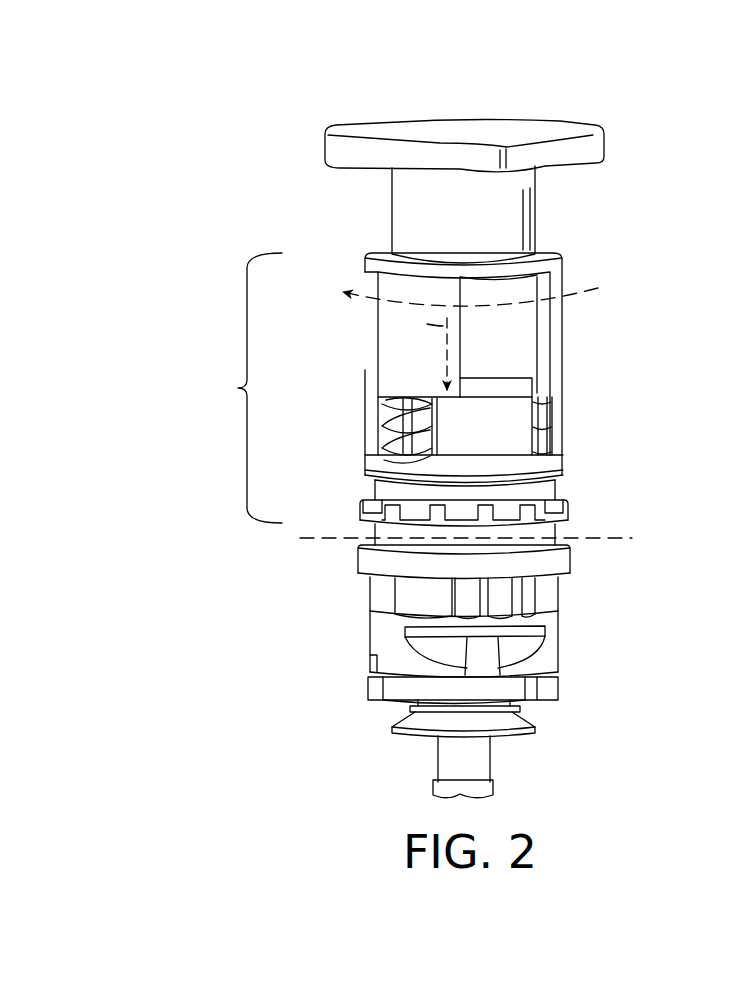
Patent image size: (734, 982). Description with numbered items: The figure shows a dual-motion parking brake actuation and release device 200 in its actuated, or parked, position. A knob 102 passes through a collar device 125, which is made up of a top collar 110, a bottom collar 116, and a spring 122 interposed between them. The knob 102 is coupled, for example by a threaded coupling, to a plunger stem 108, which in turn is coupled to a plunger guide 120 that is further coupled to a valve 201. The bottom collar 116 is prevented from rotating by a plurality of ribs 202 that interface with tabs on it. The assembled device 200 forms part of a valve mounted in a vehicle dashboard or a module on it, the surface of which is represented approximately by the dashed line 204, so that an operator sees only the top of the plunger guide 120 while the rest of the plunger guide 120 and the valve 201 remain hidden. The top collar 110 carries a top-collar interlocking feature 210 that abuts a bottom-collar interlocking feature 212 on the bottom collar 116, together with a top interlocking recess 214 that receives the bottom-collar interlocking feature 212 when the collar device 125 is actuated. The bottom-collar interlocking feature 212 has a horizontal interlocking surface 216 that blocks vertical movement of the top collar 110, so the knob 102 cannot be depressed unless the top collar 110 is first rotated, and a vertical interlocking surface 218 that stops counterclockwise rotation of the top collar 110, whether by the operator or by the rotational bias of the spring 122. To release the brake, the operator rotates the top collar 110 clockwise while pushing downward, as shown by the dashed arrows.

The dual-motion parking brake actuation and release device 200 is at (383, 88).
The knob 102 is at (315, 147).
The top collar 110 is at (580, 261).
The top-collar interlocking feature 210 is at (415, 360).
The top interlocking recess 214 is at (515, 346).
The vertical interlocking surface 218 is at (470, 390).
The plunger stem 108 is at (410, 405).
The spring 122 is at (380, 440).
The horizontal interlocking surface 216 is at (446, 408).
The bottom-collar interlocking feature 212 is at (505, 435).
The bottom collar 116 is at (566, 452).
The ribs 202 is at (372, 496).
The dashed line 204 is at (624, 536).
The plunger guide 120 is at (357, 584).
The valve 201 is at (357, 688).
The collar device 125 is at (237, 388).